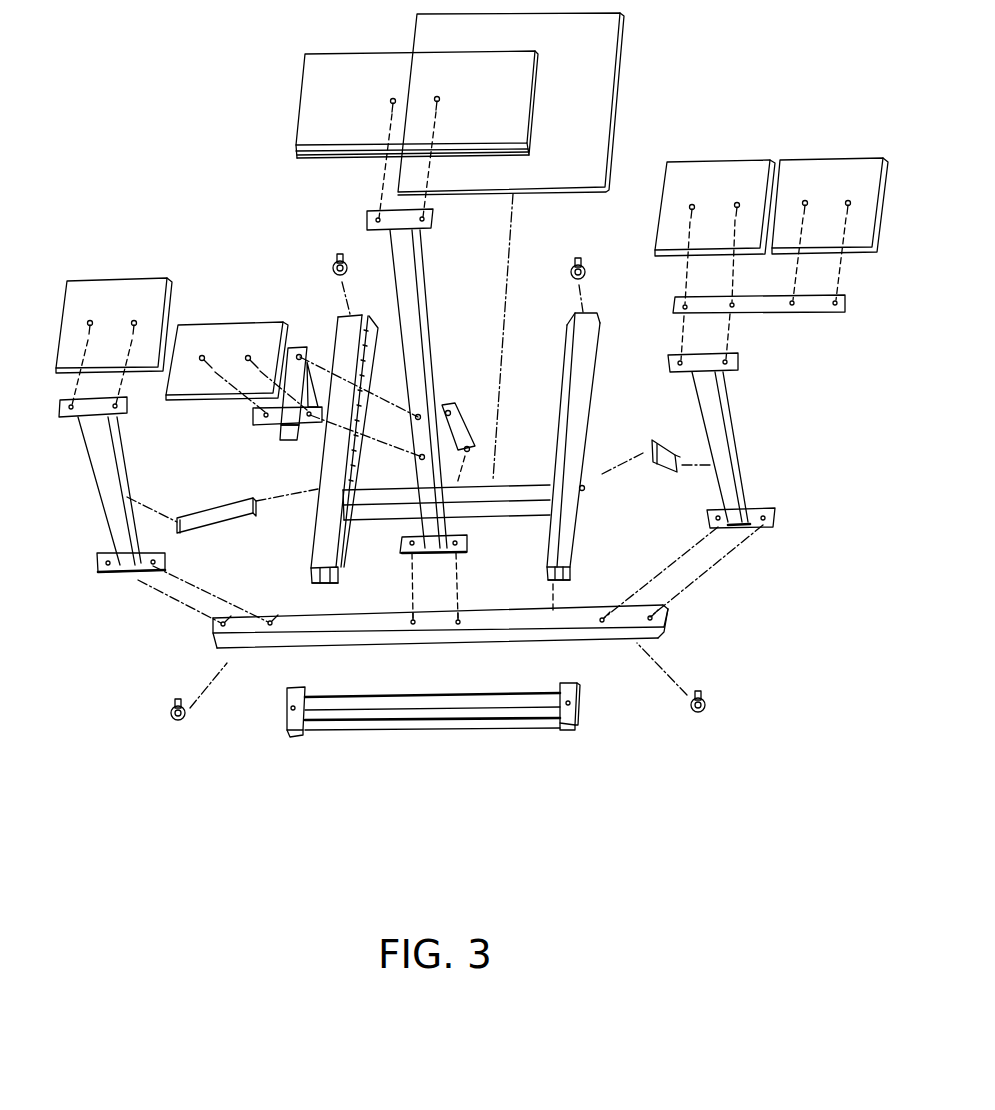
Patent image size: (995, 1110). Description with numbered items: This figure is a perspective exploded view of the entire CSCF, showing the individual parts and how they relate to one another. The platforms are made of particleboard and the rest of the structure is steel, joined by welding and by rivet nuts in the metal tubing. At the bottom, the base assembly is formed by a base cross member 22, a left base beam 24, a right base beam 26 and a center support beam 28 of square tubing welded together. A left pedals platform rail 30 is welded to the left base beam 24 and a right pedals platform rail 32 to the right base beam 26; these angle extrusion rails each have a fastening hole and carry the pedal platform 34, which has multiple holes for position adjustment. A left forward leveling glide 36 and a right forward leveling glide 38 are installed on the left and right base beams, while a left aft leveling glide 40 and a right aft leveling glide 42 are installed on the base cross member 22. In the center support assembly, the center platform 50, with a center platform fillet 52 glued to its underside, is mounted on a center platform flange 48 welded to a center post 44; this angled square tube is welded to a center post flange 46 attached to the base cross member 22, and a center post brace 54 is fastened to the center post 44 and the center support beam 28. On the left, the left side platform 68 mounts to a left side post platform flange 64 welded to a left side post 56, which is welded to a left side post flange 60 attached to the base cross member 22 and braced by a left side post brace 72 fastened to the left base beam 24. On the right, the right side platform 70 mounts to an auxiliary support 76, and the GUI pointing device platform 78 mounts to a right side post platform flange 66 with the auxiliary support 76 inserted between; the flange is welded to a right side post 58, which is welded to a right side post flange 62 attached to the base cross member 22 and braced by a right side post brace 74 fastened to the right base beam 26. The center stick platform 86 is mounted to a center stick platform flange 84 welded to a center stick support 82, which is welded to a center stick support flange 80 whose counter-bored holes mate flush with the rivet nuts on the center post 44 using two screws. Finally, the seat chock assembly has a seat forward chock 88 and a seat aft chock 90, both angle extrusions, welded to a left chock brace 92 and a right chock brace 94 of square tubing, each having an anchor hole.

The base cross member 22 is at (483, 642).
The left base beam 24 is at (310, 577).
The right base beam 26 is at (572, 570).
The center support beam 28 is at (473, 515).
The left pedals platform rail 30 is at (355, 482).
The right pedals platform rail 32 is at (567, 325).
The pedal platform 34 is at (562, 100).
The left forward leveling glide 36 is at (337, 257).
The right forward leveling glide 38 is at (577, 260).
The left aft leveling glide 40 is at (170, 720).
The right aft leveling glide 42 is at (703, 713).
The center post 44 is at (423, 333).
The center post flange 46 is at (463, 557).
The center platform flange 48 is at (430, 235).
The center platform 50 is at (407, 89).
The center platform fillet 52 is at (308, 160).
The center post brace 54 is at (446, 400).
The left side post 56 is at (103, 495).
The right side post 58 is at (732, 447).
The left side post flange 60 is at (102, 573).
The right side post flange 62 is at (770, 528).
The left side post platform flange 64 is at (75, 417).
The right side post platform flange 66 is at (730, 377).
The left side platform 68 is at (101, 314).
The right side platform 70 is at (817, 197).
The left side post brace 72 is at (197, 528).
The right side post brace 74 is at (677, 472).
The auxiliary support 76 is at (798, 313).
The GUI pointing device platform 78 is at (704, 197).
The center stick support flange 80 is at (303, 347).
The center stick support 82 is at (290, 440).
The center stick platform flange 84 is at (260, 423).
The center stick platform 86 is at (214, 360).
The seat forward chock 88 is at (431, 717).
The seat aft chock 90 is at (423, 730).
The left chock brace 92 is at (287, 737).
The right chock brace 94 is at (572, 730).